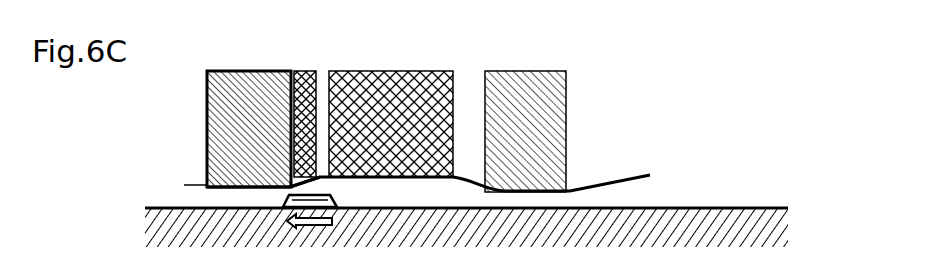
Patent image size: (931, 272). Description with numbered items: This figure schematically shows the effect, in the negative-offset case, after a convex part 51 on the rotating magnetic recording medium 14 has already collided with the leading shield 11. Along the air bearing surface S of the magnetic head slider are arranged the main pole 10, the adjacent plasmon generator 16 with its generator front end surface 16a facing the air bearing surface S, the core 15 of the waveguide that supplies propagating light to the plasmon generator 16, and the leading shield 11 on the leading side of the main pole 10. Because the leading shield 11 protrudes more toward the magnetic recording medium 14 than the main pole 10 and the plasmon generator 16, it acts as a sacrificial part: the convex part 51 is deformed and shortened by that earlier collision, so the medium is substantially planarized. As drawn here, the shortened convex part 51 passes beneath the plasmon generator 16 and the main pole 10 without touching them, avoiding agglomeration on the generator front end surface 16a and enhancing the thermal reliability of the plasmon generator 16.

The main pole 10 is at (250, 70).
The plasmon generator 16 is at (308, 70).
The generator front end surface 16a is at (284, 199).
The core 15 is at (389, 70).
The leading shield 11 is at (522, 70).
The magnetic recording medium 14 is at (771, 206).
The convex part 51 is at (322, 196).
The air bearing surface S is at (193, 190).